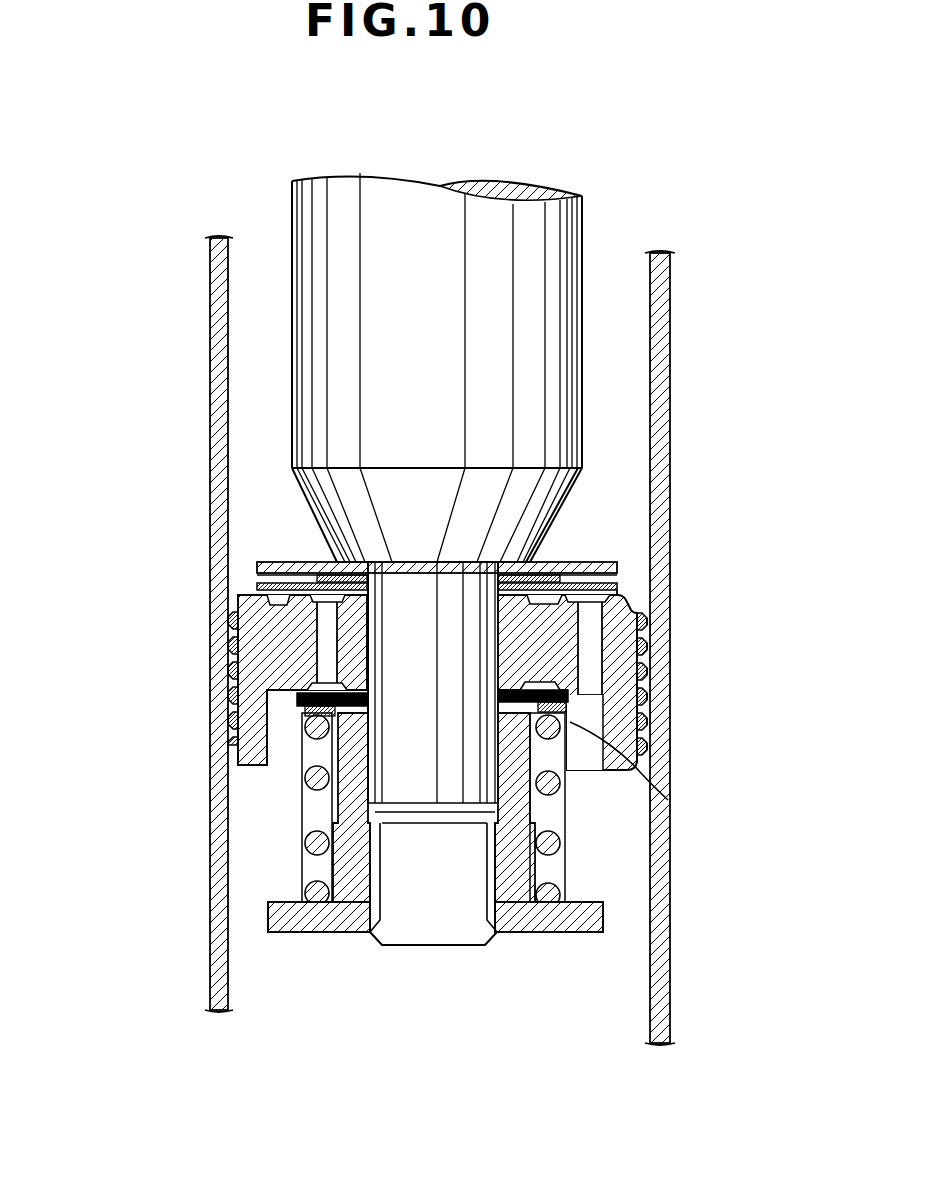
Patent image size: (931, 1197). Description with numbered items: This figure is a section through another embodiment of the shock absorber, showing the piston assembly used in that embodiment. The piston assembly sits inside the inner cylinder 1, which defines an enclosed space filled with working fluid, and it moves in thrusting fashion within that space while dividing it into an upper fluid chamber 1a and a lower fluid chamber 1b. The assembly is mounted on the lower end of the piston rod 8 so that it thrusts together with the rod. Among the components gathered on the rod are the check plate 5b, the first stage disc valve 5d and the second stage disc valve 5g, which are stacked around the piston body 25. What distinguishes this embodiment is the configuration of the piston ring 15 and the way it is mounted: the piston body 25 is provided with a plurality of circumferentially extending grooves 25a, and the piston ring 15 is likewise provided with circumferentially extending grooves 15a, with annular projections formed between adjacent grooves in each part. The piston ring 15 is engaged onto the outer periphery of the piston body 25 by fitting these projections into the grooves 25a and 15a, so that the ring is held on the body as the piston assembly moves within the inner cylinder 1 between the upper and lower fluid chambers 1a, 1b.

The inner cylinder 1 is at (203, 275).
The upper fluid chamber 1a is at (272, 394).
The lower fluid chamber 1b is at (323, 1023).
The piston rod 8 is at (560, 252).
The check plate 5b is at (262, 578).
The first stage disc valve 5d is at (628, 602).
The second stage disc valve 5g is at (625, 735).
The piston ring 15 is at (660, 648).
The grooves 15a is at (650, 730).
The piston body 25 is at (236, 645).
The grooves 25a is at (237, 710).